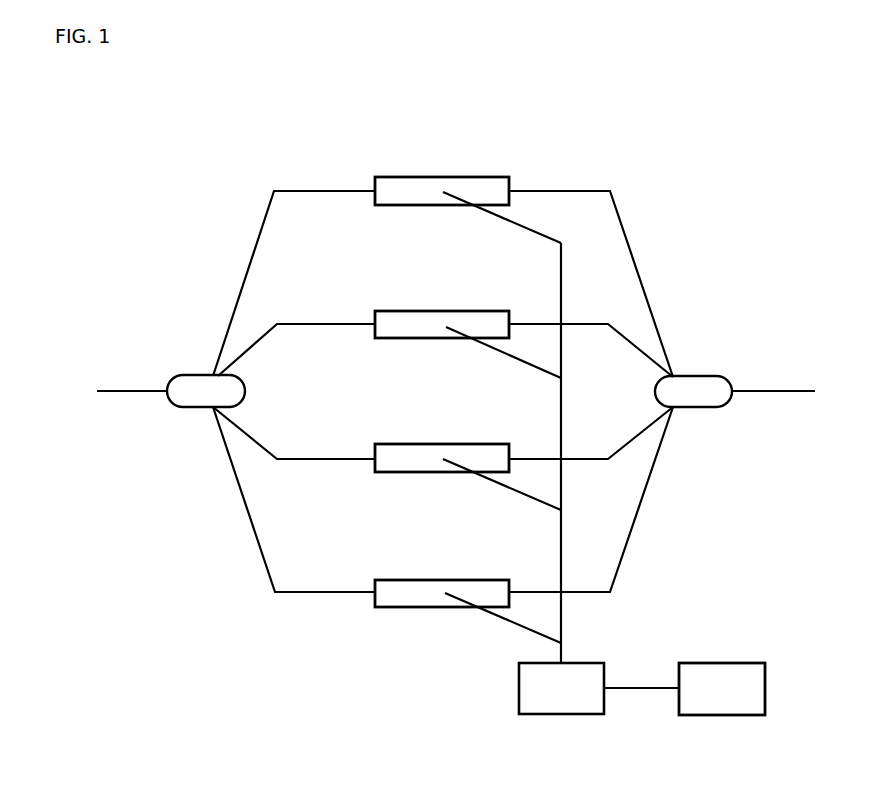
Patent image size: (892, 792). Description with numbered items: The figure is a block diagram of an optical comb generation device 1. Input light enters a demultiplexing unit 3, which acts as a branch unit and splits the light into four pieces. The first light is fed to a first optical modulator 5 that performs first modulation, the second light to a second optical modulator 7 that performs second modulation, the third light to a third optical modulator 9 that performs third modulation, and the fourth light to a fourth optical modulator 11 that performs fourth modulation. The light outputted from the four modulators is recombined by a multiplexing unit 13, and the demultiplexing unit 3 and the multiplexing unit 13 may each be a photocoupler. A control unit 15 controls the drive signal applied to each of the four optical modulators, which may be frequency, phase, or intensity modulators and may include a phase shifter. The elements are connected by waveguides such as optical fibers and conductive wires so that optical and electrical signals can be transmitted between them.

The optical comb generation device 1 is at (591, 126).
The demultiplexing unit 3 is at (183, 386).
The first optical modulator 5 is at (413, 188).
The second optical modulator 7 is at (421, 318).
The third optical modulator 9 is at (417, 456).
The fourth optical modulator 11 is at (424, 588).
The multiplexing unit 13 is at (702, 388).
The control unit 15 is at (722, 673).